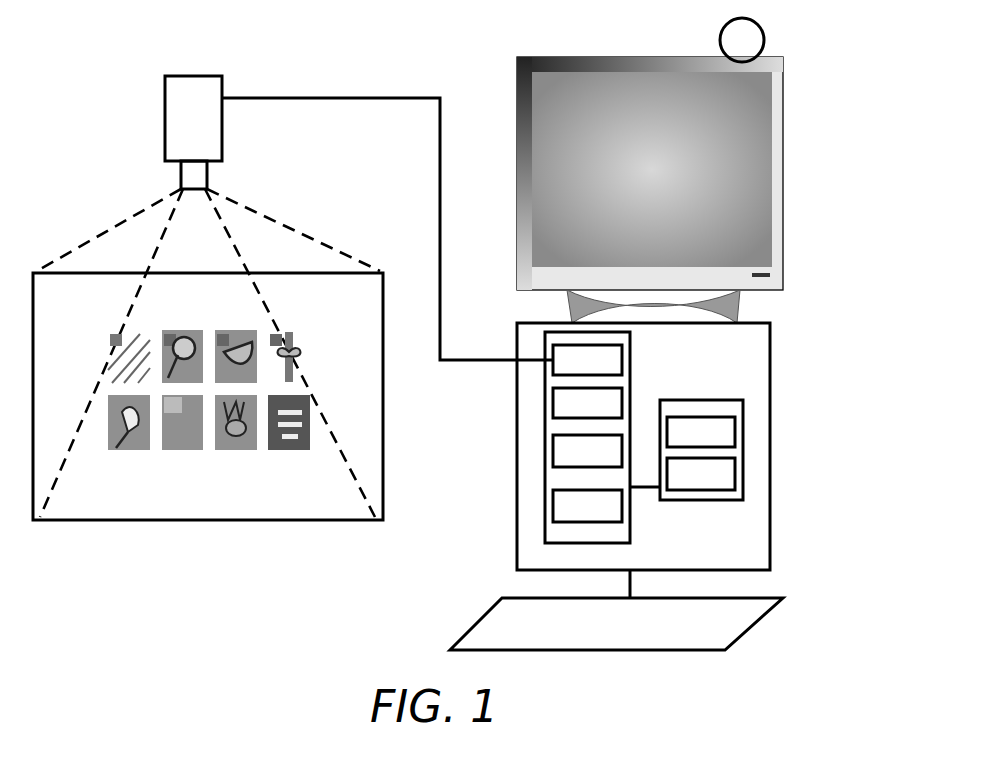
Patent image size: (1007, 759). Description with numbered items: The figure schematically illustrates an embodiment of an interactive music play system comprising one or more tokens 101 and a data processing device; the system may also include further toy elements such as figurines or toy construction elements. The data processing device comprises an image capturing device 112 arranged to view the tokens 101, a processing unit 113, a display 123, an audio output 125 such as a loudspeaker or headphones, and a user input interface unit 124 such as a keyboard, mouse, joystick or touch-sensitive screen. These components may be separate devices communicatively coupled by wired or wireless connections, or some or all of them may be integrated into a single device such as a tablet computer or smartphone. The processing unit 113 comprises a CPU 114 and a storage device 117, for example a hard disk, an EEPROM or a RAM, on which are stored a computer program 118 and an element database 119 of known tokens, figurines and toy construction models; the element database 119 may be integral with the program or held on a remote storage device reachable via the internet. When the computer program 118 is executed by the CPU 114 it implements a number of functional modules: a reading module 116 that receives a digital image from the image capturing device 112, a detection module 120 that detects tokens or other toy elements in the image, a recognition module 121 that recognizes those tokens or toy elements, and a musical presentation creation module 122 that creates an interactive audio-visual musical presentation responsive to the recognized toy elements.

The tokens 101 is at (193, 452).
The image capturing device 112 is at (165, 122).
The processing unit 113 is at (770, 443).
The CPU 114 is at (587, 543).
The reading module 116 is at (580, 345).
The storage device 117 is at (685, 500).
The computer program 118 is at (703, 412).
The element database 119 is at (728, 483).
The detection module 120 is at (552, 408).
The recognition module 121 is at (552, 453).
The musical presentation creation module 122 is at (552, 503).
The display 123 is at (612, 57).
The user input interface unit 124 is at (748, 635).
The audio output 125 is at (743, 18).